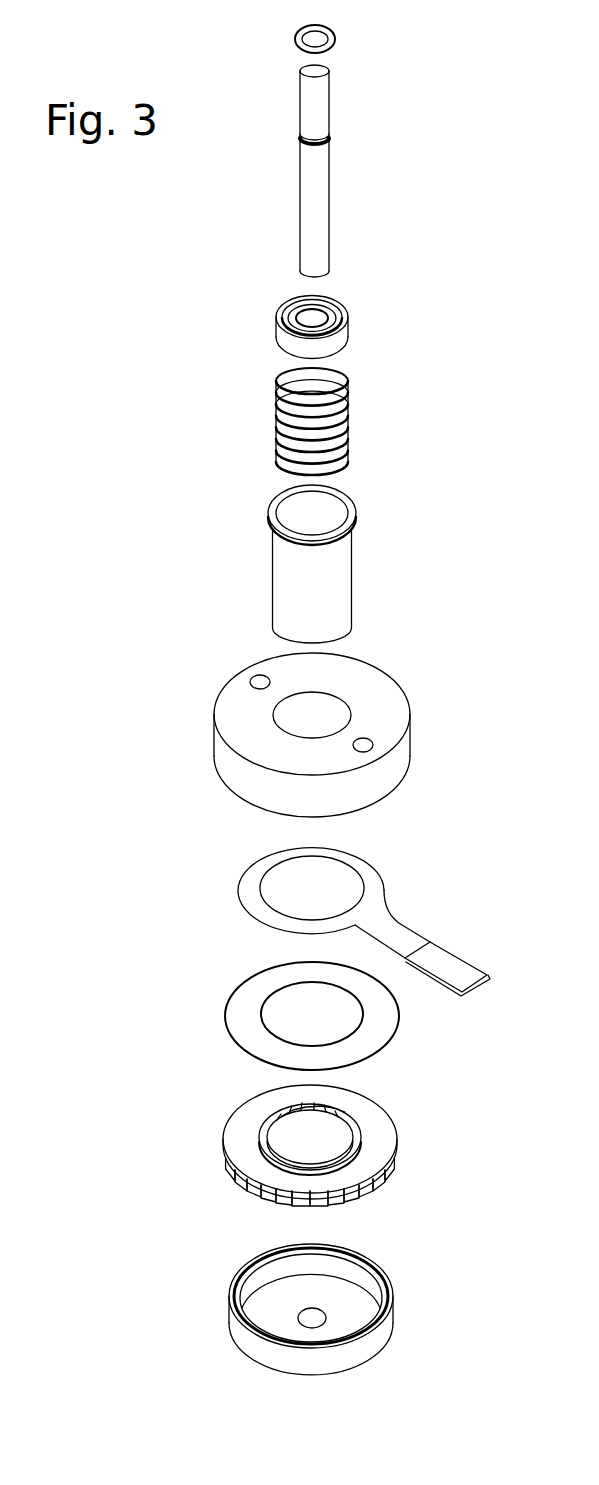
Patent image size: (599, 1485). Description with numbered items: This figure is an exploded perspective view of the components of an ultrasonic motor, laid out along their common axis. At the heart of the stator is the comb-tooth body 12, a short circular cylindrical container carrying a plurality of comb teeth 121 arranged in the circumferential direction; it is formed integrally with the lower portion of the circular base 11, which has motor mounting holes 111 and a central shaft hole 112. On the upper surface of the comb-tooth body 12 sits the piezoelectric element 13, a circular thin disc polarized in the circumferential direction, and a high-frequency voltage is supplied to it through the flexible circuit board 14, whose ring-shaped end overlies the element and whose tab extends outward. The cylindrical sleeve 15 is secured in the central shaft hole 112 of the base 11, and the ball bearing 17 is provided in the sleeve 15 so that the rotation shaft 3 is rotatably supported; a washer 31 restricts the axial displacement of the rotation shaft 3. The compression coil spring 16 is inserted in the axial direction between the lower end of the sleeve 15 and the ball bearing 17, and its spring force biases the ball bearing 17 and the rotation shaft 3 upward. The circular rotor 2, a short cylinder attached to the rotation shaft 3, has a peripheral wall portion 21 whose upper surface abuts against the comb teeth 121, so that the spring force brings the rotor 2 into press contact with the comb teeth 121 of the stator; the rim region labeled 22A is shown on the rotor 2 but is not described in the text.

The rotor 2 is at (313, 1309).
The peripheral wall portion 21 is at (233, 1323).
The housing rim 22A is at (387, 1273).
The rotation shaft 3 is at (322, 195).
The washer 31 is at (337, 42).
The circular base 11 is at (341, 730).
The motor mounting holes 111 is at (373, 746).
The central shaft hole 112 is at (337, 698).
The comb-tooth body 12 is at (337, 1145).
The comb teeth 121 is at (390, 1178).
The piezoelectric element 13 is at (383, 1035).
The flexible circuit board 14 is at (386, 896).
The cylindrical sleeve 15 is at (343, 567).
The compression coil spring 16 is at (348, 437).
The ball bearing 17 is at (347, 335).